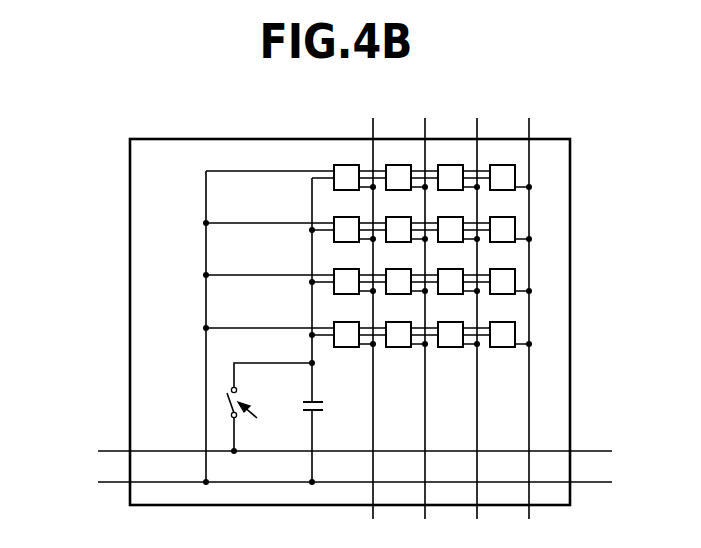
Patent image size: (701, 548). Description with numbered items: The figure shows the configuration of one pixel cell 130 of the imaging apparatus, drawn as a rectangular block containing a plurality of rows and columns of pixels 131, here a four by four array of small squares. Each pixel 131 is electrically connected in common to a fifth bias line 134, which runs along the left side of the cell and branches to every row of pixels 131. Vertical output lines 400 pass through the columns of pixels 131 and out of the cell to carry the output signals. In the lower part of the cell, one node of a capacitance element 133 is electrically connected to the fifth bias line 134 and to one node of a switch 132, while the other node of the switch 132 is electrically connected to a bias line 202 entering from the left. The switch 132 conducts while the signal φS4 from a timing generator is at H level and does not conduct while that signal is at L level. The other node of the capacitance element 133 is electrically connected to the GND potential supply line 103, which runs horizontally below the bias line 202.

The pixel cell 130 is at (130, 222).
The pixel 131 is at (349, 165).
The switch 132 is at (227, 407).
The capacitance element 133 is at (323, 406).
The fifth bias line 134 is at (312, 252).
The output line 400 is at (531, 126).
The bias line 202 is at (100, 451).
The GND potential supply line 103 is at (100, 482).